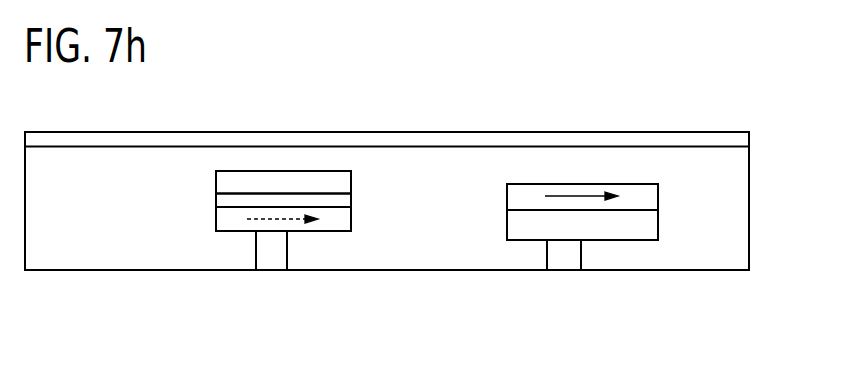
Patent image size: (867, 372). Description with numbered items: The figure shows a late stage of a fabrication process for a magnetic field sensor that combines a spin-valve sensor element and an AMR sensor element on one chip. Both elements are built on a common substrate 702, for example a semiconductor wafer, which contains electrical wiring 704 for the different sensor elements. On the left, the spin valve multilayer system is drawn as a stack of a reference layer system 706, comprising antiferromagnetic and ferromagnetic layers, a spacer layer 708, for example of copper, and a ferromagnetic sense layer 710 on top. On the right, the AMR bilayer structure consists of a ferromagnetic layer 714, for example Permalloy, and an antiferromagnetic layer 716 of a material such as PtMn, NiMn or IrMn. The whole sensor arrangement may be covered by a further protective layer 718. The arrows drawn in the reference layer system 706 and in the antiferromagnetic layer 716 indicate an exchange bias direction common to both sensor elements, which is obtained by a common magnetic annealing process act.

The common substrate 702 is at (665, 258).
The electrical wiring 704 is at (563, 258).
The reference layer system 706 is at (335, 221).
The spacer layer 708 is at (228, 200).
The ferromagnetic sense layer 710 is at (335, 182).
The ferromagnetic layer 714 is at (652, 230).
The antiferromagnetic layer 716 is at (652, 193).
The protective layer 718 is at (555, 140).